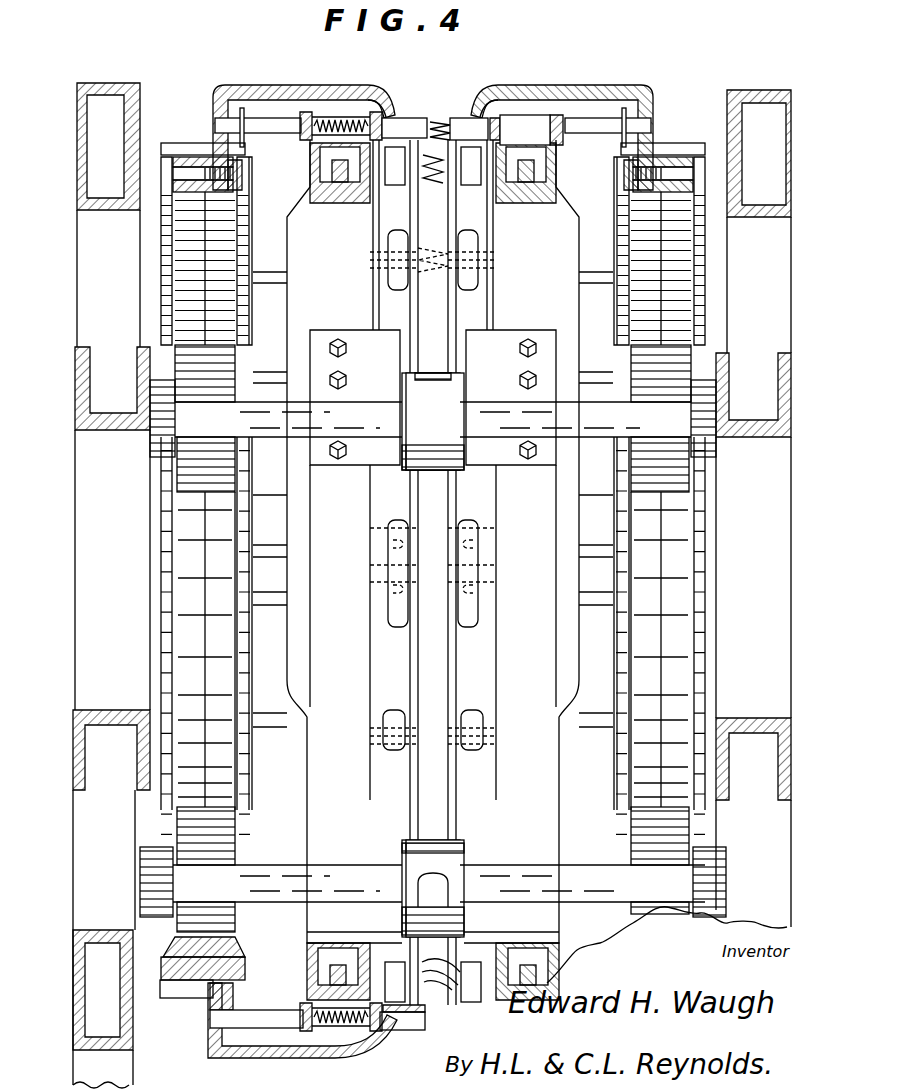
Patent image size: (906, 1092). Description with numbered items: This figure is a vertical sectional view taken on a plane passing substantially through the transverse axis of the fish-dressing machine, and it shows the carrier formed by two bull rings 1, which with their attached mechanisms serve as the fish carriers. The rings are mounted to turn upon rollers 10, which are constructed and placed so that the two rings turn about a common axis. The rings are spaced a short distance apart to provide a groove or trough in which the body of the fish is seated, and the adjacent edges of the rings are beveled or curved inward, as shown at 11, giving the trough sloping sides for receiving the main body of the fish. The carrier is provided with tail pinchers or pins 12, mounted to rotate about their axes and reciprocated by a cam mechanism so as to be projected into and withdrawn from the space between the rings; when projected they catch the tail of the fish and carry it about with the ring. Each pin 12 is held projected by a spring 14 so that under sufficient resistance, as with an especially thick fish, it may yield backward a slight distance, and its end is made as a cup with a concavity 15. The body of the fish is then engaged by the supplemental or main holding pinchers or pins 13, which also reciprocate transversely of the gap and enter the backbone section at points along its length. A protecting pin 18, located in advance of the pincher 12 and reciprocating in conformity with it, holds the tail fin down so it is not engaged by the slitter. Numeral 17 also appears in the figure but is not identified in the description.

The bull ring 1 is at (262, 99).
The roller 10 is at (439, 652).
The beveled inner edge 11 is at (384, 104).
The tail pincher or pin 12 is at (400, 122).
The main holding pincher or pin 13 is at (408, 262).
The spring 14 is at (320, 128).
The concavity 15 is at (432, 154).
The clutch drum 17 is at (210, 143).
The protecting pin 18 is at (390, 523).